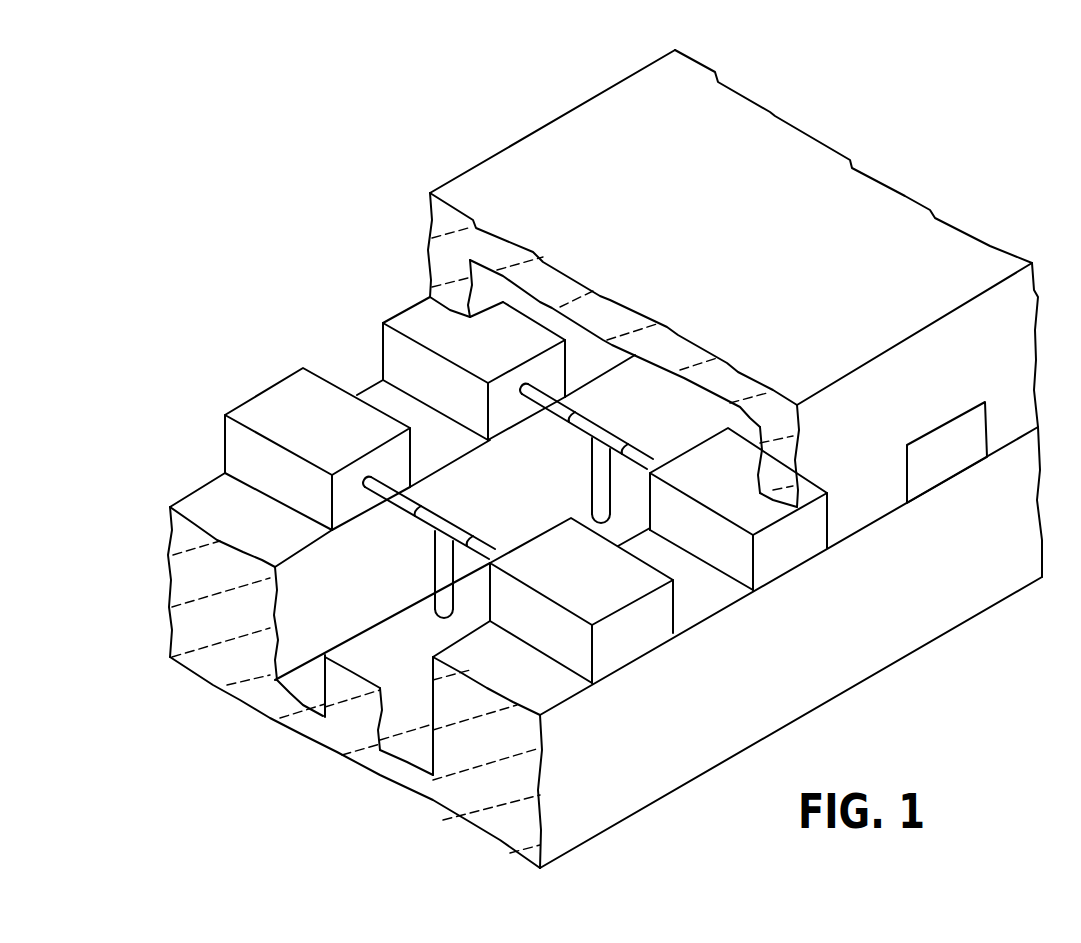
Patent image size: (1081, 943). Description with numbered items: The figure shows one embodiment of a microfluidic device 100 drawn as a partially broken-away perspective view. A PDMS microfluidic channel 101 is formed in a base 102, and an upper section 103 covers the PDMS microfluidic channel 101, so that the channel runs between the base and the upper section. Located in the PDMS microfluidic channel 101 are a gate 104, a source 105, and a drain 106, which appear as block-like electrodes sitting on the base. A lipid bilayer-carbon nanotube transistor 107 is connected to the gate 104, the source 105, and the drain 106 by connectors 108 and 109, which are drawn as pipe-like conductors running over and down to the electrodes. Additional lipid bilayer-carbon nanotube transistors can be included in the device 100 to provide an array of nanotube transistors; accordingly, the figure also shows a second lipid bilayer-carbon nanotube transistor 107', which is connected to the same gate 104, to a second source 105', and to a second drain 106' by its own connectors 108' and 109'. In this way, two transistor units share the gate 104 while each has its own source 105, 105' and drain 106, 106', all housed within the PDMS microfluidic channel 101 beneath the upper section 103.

The microfluidic device 100 is at (363, 200).
The PDMS microfluidic channel 101 is at (303, 683).
The base 102 is at (460, 804).
The upper section 103 is at (763, 220).
The gate 104 is at (360, 712).
The source 105 is at (581, 600).
The source 105' is at (738, 509).
The drain 106 is at (317, 449).
The drain 106' is at (474, 368).
The lipid bilayer-carbon nanotube transistor 107 is at (463, 507).
The lipid bilayer-carbon nanotube transistor 107' is at (612, 414).
The connector 108 is at (487, 556).
The connector 108' is at (644, 464).
The connector 109 is at (411, 526).
The connector 109' is at (579, 426).